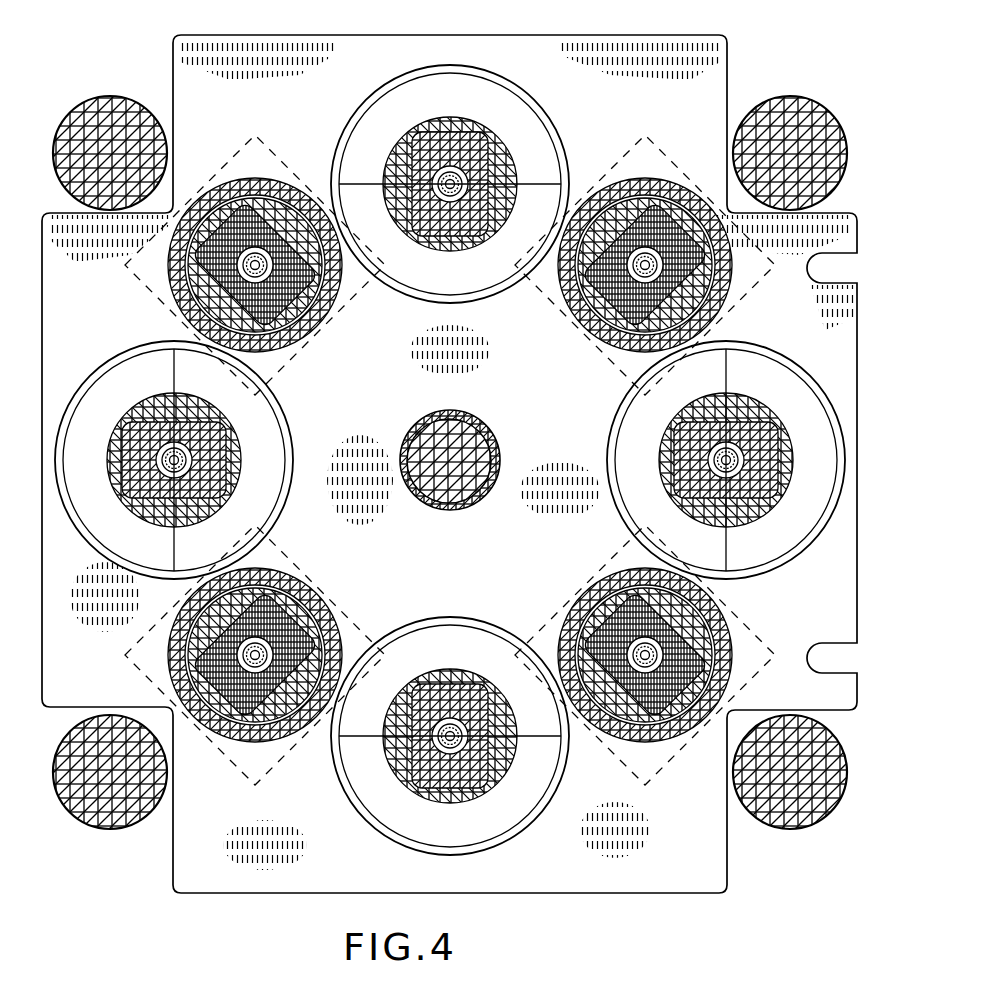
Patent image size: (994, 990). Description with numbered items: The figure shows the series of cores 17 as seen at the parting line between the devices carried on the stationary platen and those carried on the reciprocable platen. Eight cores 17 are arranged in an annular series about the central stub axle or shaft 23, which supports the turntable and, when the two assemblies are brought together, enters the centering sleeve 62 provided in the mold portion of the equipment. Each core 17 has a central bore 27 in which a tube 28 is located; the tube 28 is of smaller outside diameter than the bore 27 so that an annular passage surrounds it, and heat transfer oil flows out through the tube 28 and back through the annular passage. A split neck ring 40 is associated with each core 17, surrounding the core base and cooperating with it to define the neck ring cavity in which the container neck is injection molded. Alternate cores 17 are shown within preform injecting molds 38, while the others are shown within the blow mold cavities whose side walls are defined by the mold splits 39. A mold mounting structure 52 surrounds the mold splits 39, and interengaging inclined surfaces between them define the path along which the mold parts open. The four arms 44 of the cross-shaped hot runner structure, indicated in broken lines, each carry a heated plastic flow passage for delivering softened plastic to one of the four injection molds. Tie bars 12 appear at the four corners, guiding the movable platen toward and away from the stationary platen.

The tie bars 12 is at (140, 100).
The core 17 is at (447, 158).
The stub axle or shaft 23 is at (482, 436).
The central bore 27 is at (482, 162).
The tube 28 is at (437, 182).
The preform injecting mold 38 is at (338, 290).
The mold splits 39 is at (440, 99).
The split neck ring 40 is at (508, 183).
The arms 44 is at (305, 165).
The mold mounting structure 52 is at (530, 42).
The centering sleeve 62 is at (455, 412).